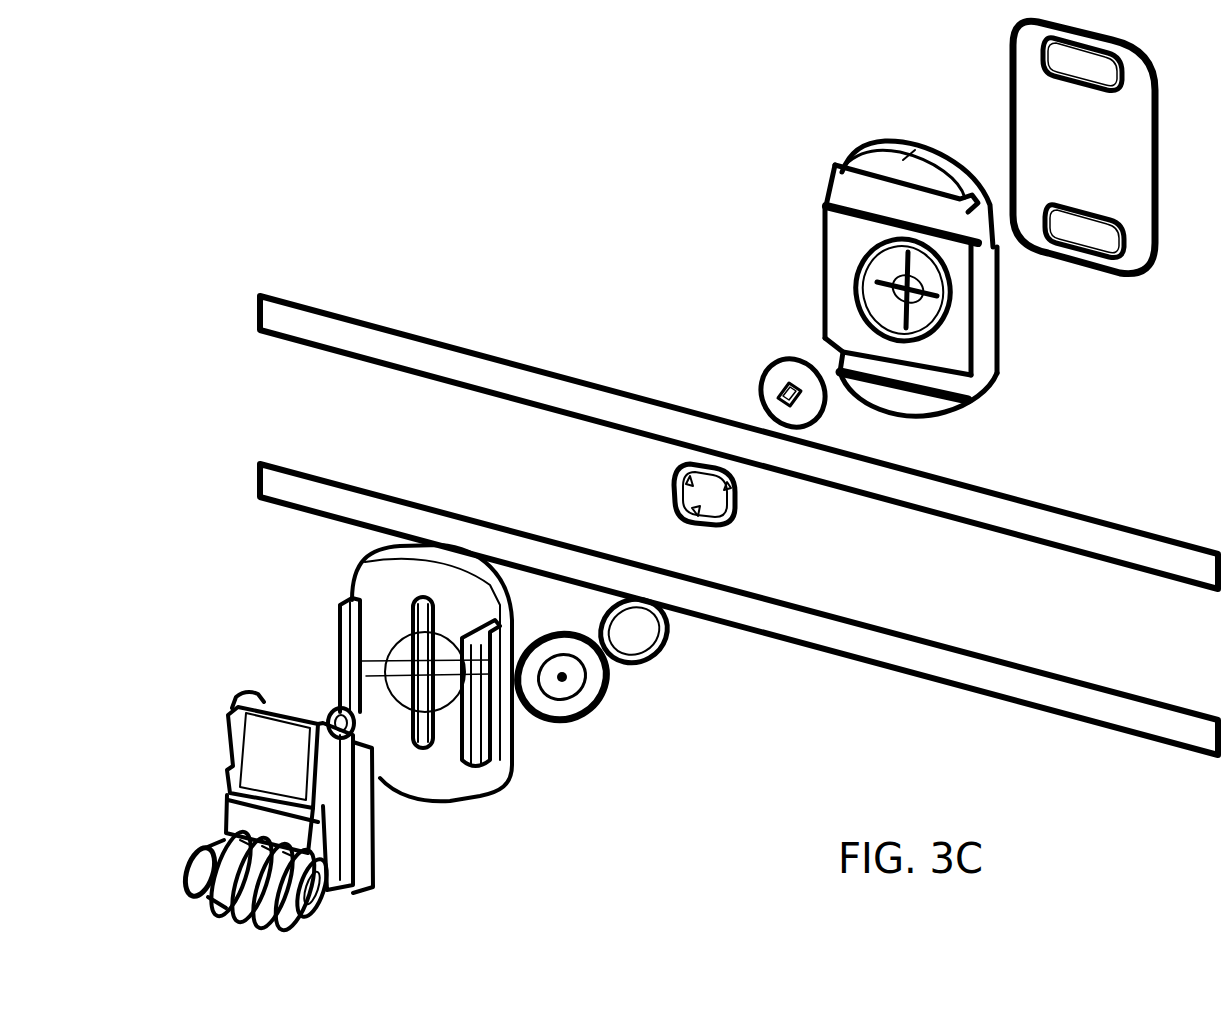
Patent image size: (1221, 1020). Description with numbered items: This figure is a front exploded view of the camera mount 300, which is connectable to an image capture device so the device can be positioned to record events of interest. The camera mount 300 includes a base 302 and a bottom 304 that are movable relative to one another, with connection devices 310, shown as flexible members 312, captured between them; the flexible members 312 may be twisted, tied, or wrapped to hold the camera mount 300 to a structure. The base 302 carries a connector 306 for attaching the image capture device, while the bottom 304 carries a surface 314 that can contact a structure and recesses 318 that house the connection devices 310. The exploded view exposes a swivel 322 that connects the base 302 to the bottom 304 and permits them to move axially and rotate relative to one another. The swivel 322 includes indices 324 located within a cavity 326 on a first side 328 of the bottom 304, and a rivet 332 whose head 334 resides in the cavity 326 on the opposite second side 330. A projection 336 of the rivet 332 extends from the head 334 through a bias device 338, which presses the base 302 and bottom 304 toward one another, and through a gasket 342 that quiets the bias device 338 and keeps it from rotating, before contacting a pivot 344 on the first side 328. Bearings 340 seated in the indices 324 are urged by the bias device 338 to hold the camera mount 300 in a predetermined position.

The camera mount 300 is at (1064, 792).
The base 302 is at (477, 707).
The bottom 304 is at (862, 227).
The connector 306 is at (417, 840).
The connection devices 310 is at (295, 265).
The flexible members 312 is at (505, 358).
The surface 314 is at (1045, 150).
The recesses 318 is at (1012, 394).
The swivel 322 is at (676, 275).
The indices 324 is at (945, 292).
The cavity 326 is at (855, 310).
The first side 328 is at (822, 222).
The second side 330 is at (993, 244).
The rivet 332 is at (756, 346).
The head 334 is at (760, 383).
The projection 336 is at (802, 400).
The bias device 338 is at (672, 495).
The bearings 340 is at (733, 507).
The gasket 342 is at (665, 647).
The pivot 344 is at (594, 697).